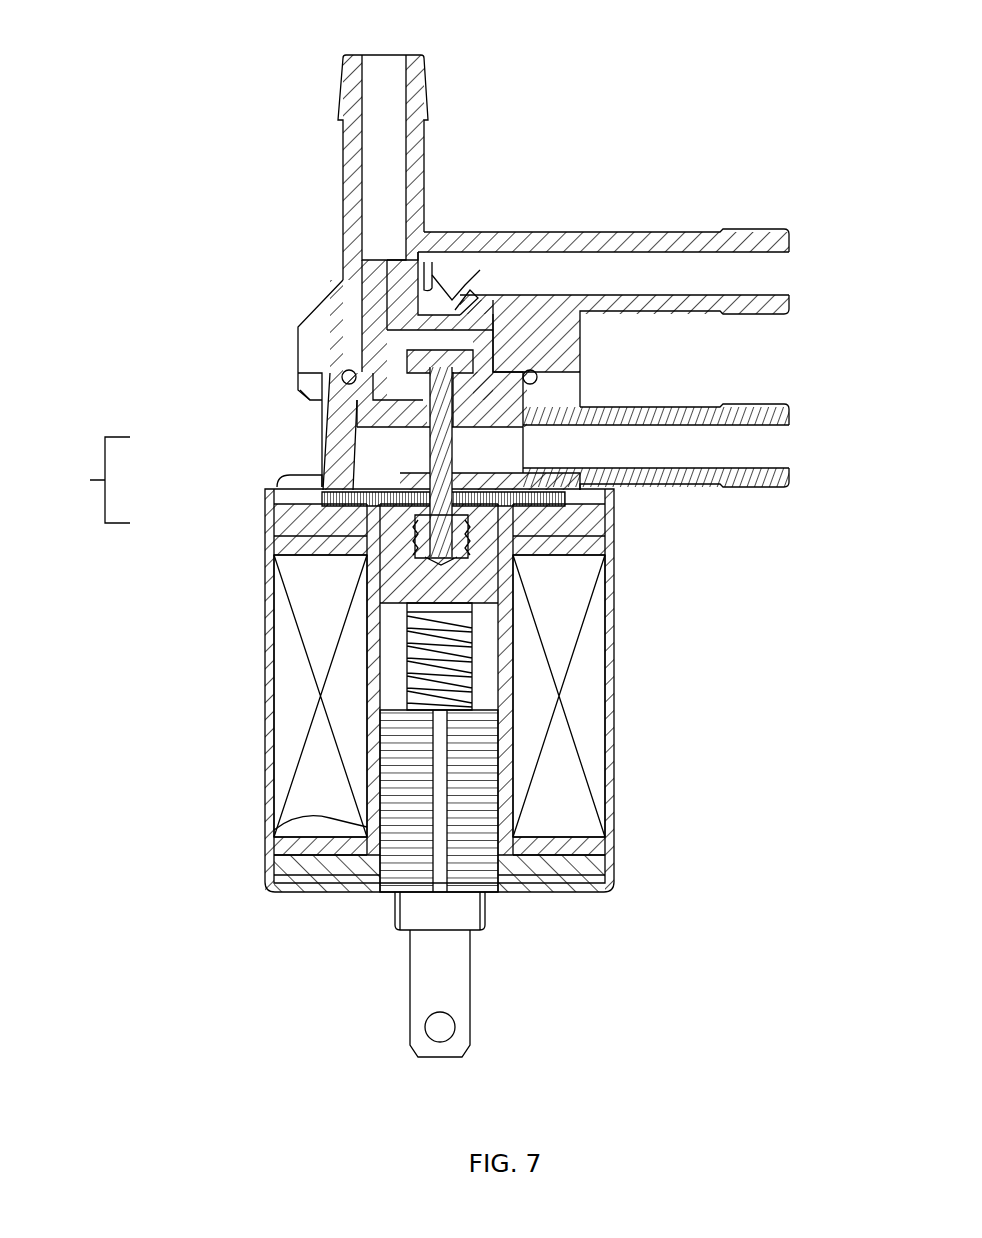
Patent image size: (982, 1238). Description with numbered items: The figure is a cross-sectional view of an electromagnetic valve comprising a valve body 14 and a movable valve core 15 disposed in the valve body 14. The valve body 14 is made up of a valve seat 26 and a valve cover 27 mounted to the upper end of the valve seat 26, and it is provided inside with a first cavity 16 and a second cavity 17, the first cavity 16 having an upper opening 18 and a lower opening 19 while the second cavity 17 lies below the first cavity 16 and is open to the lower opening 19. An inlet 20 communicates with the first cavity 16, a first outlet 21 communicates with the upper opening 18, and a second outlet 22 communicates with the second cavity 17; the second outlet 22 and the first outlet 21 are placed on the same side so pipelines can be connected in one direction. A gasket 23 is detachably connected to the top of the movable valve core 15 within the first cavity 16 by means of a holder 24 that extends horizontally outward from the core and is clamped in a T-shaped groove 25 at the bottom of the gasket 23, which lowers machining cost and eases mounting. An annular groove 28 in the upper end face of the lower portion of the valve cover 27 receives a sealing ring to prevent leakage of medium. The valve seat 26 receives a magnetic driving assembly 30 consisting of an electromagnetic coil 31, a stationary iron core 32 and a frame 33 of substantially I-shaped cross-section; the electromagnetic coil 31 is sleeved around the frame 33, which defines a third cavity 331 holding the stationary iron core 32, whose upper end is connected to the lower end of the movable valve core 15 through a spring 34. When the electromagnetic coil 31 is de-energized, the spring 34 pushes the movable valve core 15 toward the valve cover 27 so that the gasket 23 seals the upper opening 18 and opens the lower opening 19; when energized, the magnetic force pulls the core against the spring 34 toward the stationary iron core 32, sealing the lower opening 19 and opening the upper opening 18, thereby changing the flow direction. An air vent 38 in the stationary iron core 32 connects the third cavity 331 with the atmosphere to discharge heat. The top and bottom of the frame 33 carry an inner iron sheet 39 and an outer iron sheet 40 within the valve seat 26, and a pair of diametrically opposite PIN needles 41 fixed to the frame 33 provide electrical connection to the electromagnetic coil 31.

The valve body 14 is at (88, 480).
The movable valve core 15 is at (370, 603).
The first cavity 16 is at (378, 290).
The second cavity 17 is at (370, 462).
The upper opening 18 is at (445, 300).
The lower opening 19 is at (560, 410).
The inlet 20 is at (383, 68).
The first outlet 21 is at (733, 268).
The second outlet 22 is at (768, 440).
The gasket 23 is at (500, 316).
The holder 24 is at (413, 352).
The T-shaped groove 25 is at (560, 330).
The valve seat 26 is at (263, 509).
The valve cover 27 is at (287, 397).
The annular groove 28 is at (290, 374).
The magnetic driving assembly 30 is at (750, 627).
The electromagnetic coil 31 is at (597, 660).
The stationary iron core 32 is at (500, 808).
The frame 33 is at (605, 835).
The spring 34 is at (400, 700).
The air vent 38 is at (440, 795).
The inner iron sheet 39 is at (605, 525).
The outer iron sheet 40 is at (285, 872).
The PIN needles 41 is at (410, 993).
The third cavity 331 is at (375, 728).